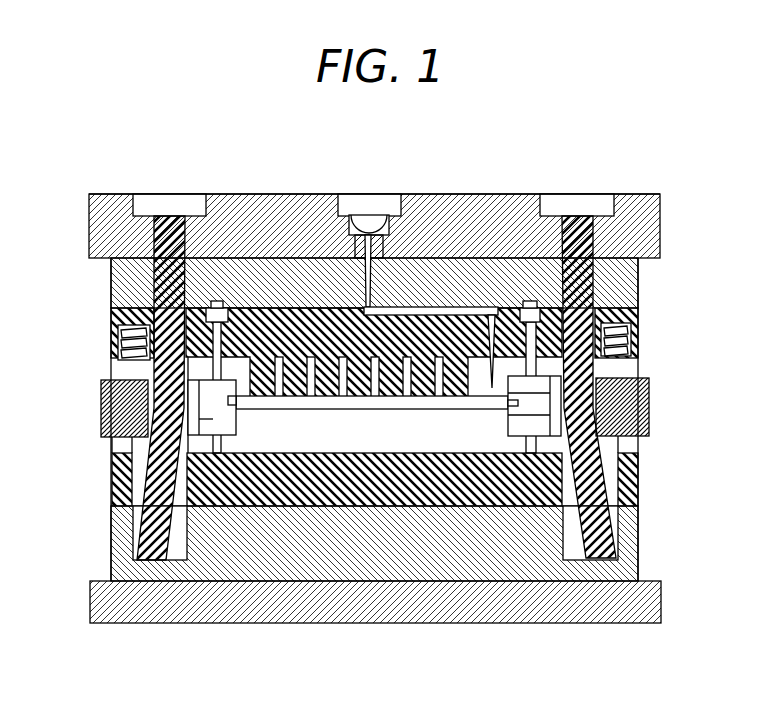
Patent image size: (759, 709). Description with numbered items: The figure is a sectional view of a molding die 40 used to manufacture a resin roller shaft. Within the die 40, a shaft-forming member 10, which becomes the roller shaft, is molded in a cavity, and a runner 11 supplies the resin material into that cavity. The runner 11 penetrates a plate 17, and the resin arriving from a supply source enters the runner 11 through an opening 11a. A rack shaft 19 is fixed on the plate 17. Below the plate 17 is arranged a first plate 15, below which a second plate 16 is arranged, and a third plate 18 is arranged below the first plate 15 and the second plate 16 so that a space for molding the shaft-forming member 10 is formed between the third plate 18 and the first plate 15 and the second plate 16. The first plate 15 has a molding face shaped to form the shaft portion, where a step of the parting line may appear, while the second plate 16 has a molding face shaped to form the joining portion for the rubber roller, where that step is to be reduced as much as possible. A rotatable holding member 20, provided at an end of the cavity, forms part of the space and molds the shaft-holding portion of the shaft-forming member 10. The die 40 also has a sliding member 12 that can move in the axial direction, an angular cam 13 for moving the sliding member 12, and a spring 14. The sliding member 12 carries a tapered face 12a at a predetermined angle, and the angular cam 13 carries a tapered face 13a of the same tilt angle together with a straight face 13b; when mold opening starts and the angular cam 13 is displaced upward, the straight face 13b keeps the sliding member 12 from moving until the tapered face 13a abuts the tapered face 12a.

The shaft-forming member 10 is at (455, 398).
The runner 11 is at (368, 270).
The opening of the runner 11a is at (358, 190).
The sliding member 12 is at (93, 393).
The tapered face of the sliding member 12a is at (104, 437).
The angular cam 13 is at (162, 240).
The tapered face of the angular cam 13a is at (104, 478).
The straight face of the angular cam 13b is at (624, 330).
The spring 14 is at (110, 331).
The first plate 15 is at (287, 340).
The second plate 16 is at (473, 375).
The plate 17 is at (607, 270).
The third plate 18 is at (380, 428).
The rack shaft 19 is at (521, 300).
The holding member 20 is at (206, 297).
The molding die 40 is at (665, 155).